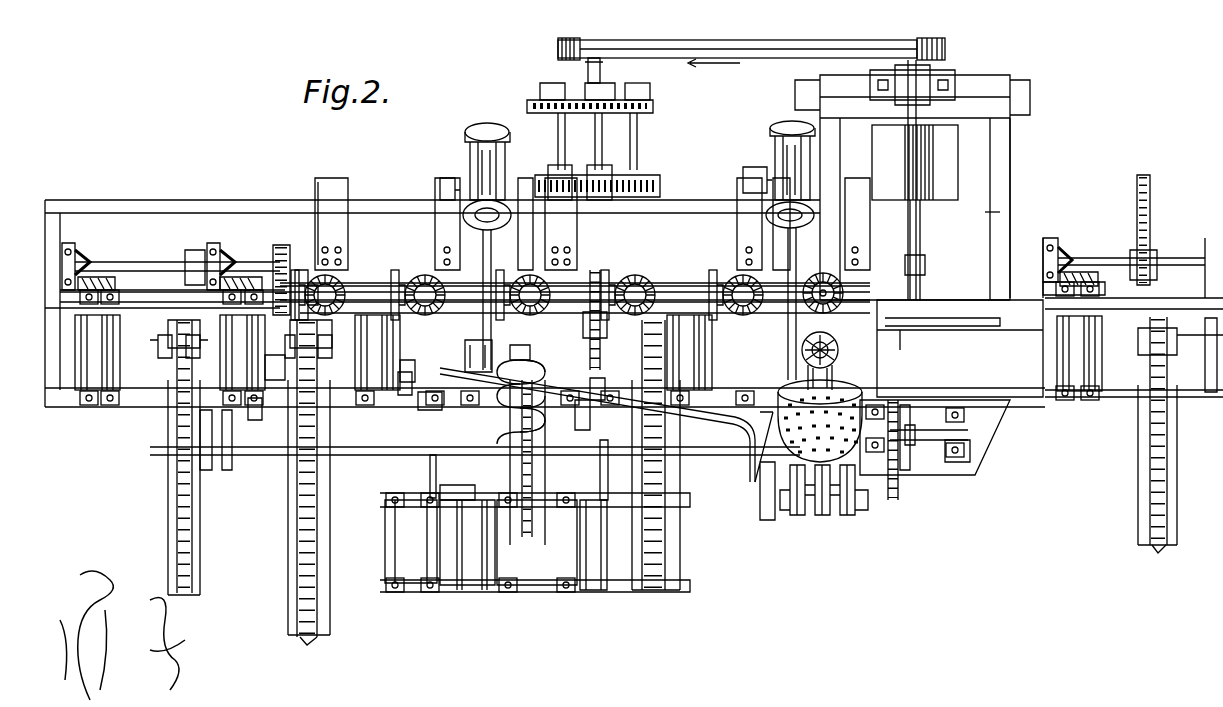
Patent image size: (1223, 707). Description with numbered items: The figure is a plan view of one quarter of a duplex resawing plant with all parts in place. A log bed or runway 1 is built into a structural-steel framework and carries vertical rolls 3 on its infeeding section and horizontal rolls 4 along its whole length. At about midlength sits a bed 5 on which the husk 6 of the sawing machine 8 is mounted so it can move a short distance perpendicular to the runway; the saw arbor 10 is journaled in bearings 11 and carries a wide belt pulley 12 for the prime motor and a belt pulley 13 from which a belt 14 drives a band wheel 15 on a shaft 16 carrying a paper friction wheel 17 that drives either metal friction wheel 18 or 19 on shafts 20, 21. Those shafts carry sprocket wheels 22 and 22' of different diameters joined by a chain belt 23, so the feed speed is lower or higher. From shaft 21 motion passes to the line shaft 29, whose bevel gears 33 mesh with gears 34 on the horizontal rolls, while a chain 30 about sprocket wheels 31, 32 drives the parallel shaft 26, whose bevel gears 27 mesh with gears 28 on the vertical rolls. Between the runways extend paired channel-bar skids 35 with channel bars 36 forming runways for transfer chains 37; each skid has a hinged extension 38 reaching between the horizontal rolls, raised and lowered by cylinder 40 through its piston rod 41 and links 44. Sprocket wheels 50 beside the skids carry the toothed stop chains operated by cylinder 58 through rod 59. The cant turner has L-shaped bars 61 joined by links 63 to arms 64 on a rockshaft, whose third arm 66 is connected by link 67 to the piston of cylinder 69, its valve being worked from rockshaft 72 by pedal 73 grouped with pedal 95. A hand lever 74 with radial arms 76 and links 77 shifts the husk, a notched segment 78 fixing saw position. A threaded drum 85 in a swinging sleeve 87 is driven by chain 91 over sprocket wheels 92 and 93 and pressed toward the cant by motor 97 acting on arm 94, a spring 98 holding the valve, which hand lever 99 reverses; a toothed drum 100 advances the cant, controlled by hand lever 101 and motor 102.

The log bed or runway 1 is at (232, 199).
The vertical rolls 3 is at (435, 330).
The horizontal rolls 4 is at (95, 340).
The bed or base 5 is at (912, 187).
The frame or husk 6 is at (980, 212).
The sawing machine 8 is at (950, 316).
The saw arbor 10 is at (908, 216).
The boxes or bearings 11 is at (935, 80).
The wide belt pulley 12 is at (940, 160).
The belt pulley 13 is at (945, 42).
The belt 14 is at (728, 52).
The band wheel 15 is at (556, 49).
The shaft 16 is at (602, 142).
The friction wheel 17 is at (600, 200).
The metal friction wheel 18 is at (560, 200).
The metal friction wheel 19 is at (655, 186).
The shaft 20 is at (558, 146).
The shaft 21 is at (638, 150).
The sprocket wheel 22 is at (574, 96).
The sprocket wheel 22' is at (647, 109).
The chain belt 23 is at (592, 100).
The shaft 26 is at (370, 292).
The bevel gear wheels 27 is at (420, 276).
The bevel gear 28 is at (340, 285).
The line shaft 29 is at (148, 262).
The chain or belt 30 is at (292, 266).
The sprocket wheel 31 is at (292, 252).
The sprocket wheel 32 is at (277, 367).
The bevel gears 33 is at (82, 258).
The bevel gear 34 is at (262, 278).
The skids or cross beams 35 is at (288, 540).
The channel bars 36 is at (320, 630).
The transfer chains 37 is at (297, 560).
The hinged extension 38 is at (170, 370).
The cylinder 40 is at (592, 525).
The piston rod 41 is at (613, 470).
The links 44 is at (160, 345).
The sprocket wheels 50 is at (200, 470).
The cylinder 58 is at (545, 530).
The piston rod 59 is at (458, 515).
The L-shaped bars 61 is at (255, 420).
The link 63 is at (212, 452).
The arm 64 is at (230, 452).
The third arm 66 is at (430, 410).
The link 67 is at (405, 395).
The cylinder 69 is at (395, 525).
The rockshaft 72 is at (426, 476).
The pedal or actuating lever 73 is at (848, 516).
The hand lever 74 is at (905, 440).
The radial arms 76 is at (972, 450).
The links 77 is at (975, 430).
The notched rack or segment 78 is at (898, 490).
The roll or drum 85 is at (442, 496).
The swinging sleeve 87 is at (498, 412).
The chain belt 91 is at (605, 320).
The sprocket wheel 92 is at (600, 400).
The sprocket wheel 93 is at (600, 282).
The arm 94 is at (467, 364).
The pedal 95 is at (797, 516).
The pressure fluid motor 97 is at (470, 150).
The spring 98 is at (440, 190).
The hand lever 99 is at (724, 418).
The roll or drum 100 is at (846, 390).
The hand lever 101 is at (766, 480).
The motor 102 is at (772, 150).